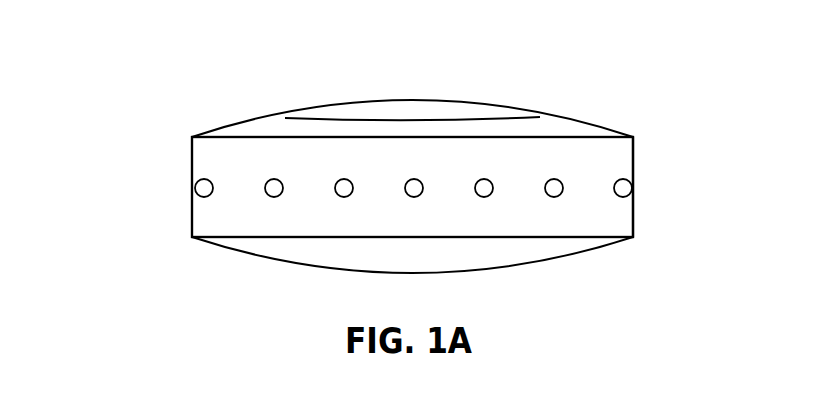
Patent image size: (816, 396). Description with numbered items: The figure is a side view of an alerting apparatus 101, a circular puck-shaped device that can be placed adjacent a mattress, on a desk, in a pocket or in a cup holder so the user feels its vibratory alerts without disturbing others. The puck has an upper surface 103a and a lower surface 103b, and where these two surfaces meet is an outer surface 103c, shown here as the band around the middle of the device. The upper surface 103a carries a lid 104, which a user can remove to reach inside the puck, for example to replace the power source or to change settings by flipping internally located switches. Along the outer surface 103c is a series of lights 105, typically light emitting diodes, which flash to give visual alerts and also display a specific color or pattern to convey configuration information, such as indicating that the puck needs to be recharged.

The apparatus 101 is at (138, 164).
The upper surface 103a is at (243, 120).
The lower surface 103b is at (283, 263).
The outer surface 103c is at (547, 226).
The lid 104 is at (410, 101).
The series of lights 105 is at (666, 181).